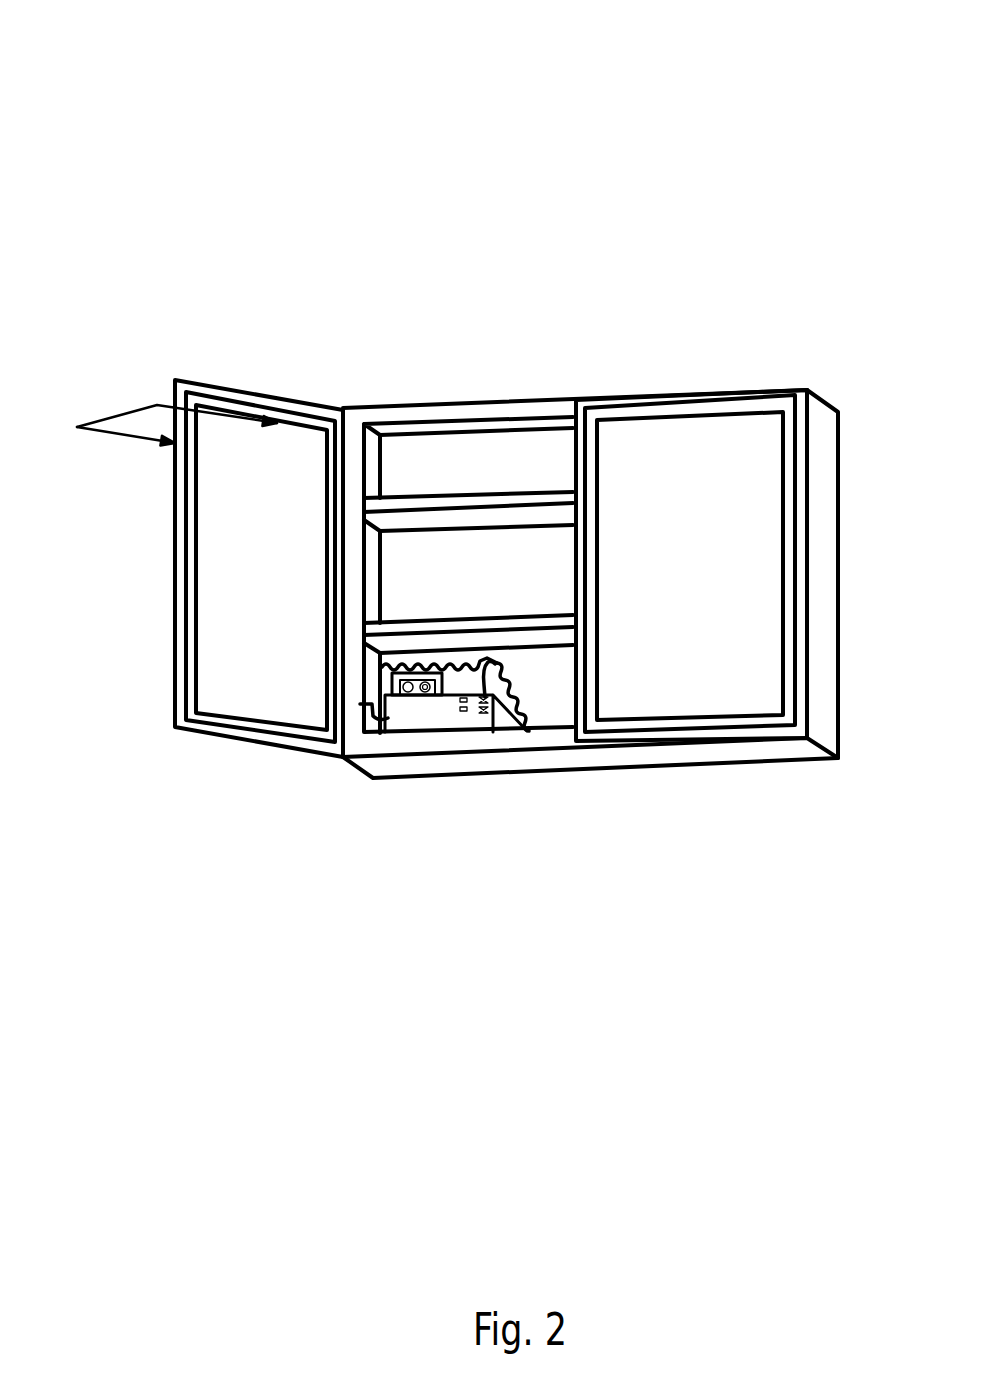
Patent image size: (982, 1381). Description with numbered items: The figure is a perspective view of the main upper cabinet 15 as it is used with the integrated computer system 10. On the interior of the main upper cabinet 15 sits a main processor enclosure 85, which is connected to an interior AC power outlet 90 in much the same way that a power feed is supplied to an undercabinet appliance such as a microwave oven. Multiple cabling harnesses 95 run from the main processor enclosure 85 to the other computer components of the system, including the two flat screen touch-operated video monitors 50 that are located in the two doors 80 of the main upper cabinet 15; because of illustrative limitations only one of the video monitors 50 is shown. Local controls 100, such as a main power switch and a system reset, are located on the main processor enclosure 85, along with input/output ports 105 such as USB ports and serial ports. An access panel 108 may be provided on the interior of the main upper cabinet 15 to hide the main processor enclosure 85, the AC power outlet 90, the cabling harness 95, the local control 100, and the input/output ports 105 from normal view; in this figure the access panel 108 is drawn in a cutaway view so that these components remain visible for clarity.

The integrated computer system 10 is at (120, 180).
The main upper cabinet 15 is at (520, 400).
The flat screen touch-operated video monitor 50 is at (728, 655).
The door 80 is at (217, 545).
The main processor enclosure 85 is at (432, 718).
The AC power outlet 90 is at (400, 700).
The cabling harness 95 is at (483, 683).
The local control 100 is at (485, 715).
The input/output port 105 is at (465, 713).
The access panel 108 is at (555, 682).